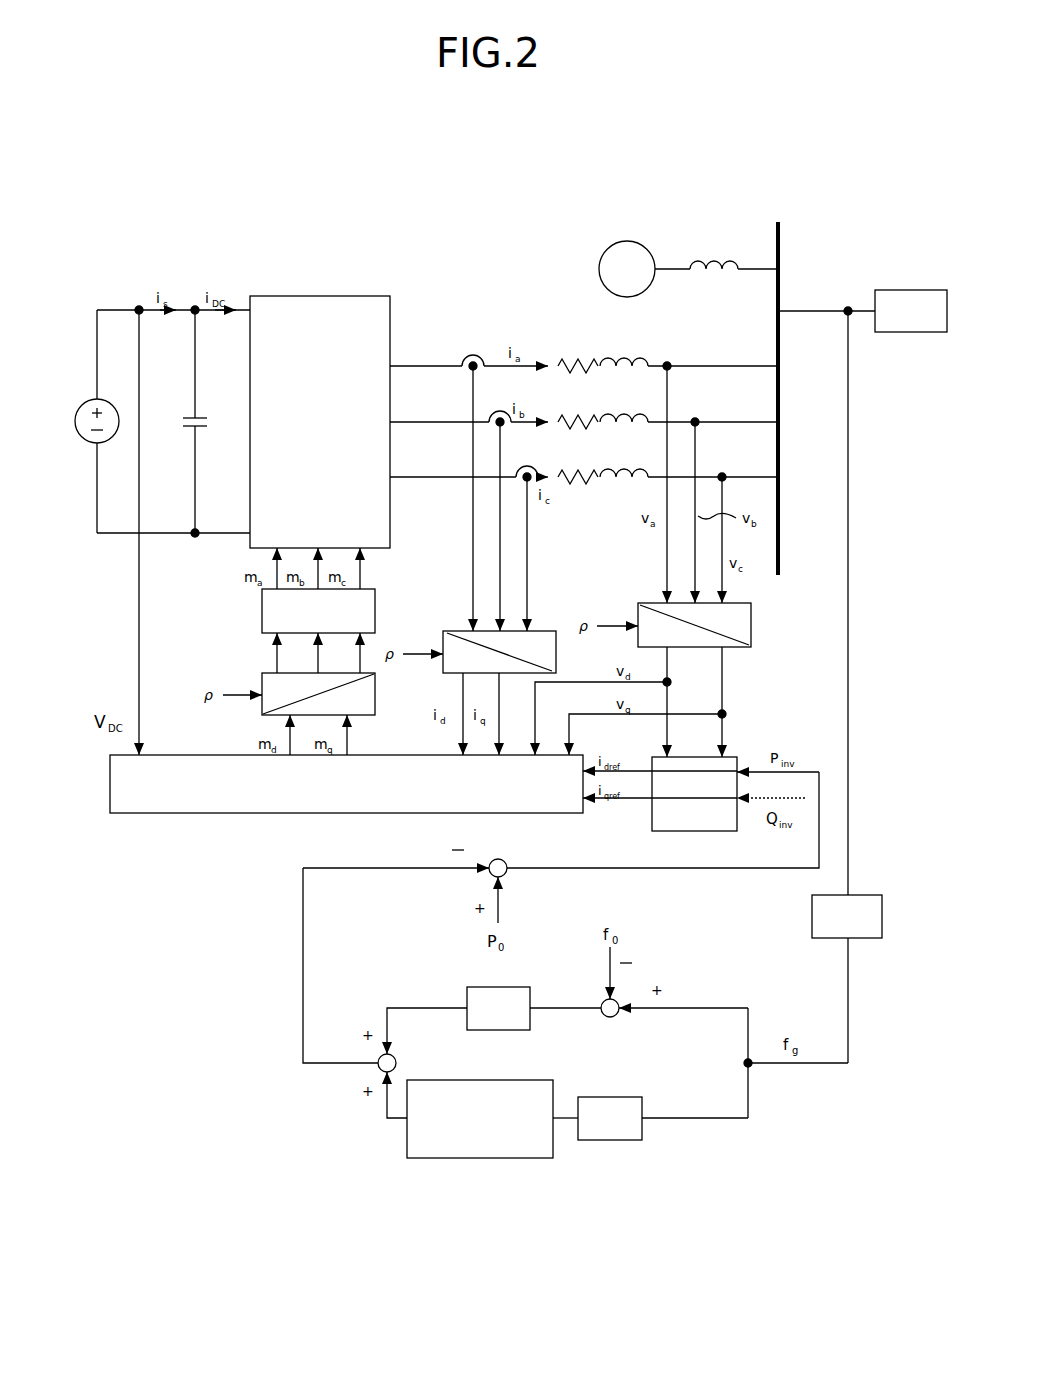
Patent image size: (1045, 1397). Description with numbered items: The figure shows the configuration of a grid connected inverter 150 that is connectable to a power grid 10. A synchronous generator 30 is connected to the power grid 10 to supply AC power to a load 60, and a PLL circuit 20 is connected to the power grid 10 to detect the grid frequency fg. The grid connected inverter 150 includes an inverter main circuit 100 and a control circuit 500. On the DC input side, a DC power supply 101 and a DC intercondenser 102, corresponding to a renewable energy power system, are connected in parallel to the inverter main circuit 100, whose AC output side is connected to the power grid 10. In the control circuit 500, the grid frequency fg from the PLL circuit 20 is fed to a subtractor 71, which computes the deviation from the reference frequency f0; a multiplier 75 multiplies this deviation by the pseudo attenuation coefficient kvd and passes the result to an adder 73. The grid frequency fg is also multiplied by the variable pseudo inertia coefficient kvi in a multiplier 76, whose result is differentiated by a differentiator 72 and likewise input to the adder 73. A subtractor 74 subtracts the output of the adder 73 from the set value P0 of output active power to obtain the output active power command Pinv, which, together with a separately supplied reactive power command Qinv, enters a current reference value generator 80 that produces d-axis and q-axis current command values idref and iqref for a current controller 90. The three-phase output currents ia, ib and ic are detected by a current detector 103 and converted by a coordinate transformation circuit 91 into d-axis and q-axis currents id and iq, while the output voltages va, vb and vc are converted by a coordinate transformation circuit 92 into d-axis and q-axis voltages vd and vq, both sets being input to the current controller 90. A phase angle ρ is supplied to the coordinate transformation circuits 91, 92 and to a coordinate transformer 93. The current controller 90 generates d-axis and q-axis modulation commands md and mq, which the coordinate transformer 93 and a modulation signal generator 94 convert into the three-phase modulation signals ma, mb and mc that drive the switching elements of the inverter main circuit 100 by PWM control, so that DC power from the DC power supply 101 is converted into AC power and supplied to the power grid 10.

The power grid 10 is at (782, 245).
The PLL circuit 20 is at (884, 915).
The synchronous generator 30 is at (627, 242).
The load 60 is at (914, 290).
The subtractor 71 is at (610, 1018).
The differentiator 72 is at (482, 1158).
The adder 73 is at (397, 1063).
The subtractor 74 is at (507, 863).
The multiplier 75 is at (470, 988).
The multiplier 76 is at (612, 1140).
The current reference value generator 80 is at (652, 812).
The current controller 90 is at (148, 813).
The coordinate transformation circuit 91 is at (447, 633).
The coordinate transformation circuit 92 is at (646, 606).
The coordinate transformer 93 is at (261, 677).
The modulation signal generator 94 is at (262, 612).
The inverter main circuit 100 is at (326, 300).
The DC power supply 101 is at (90, 402).
The DC intercondenser 102 is at (192, 414).
The current detector 103 is at (468, 372).
The grid connected inverter 150 is at (198, 980).
The control circuit 500 is at (692, 936).